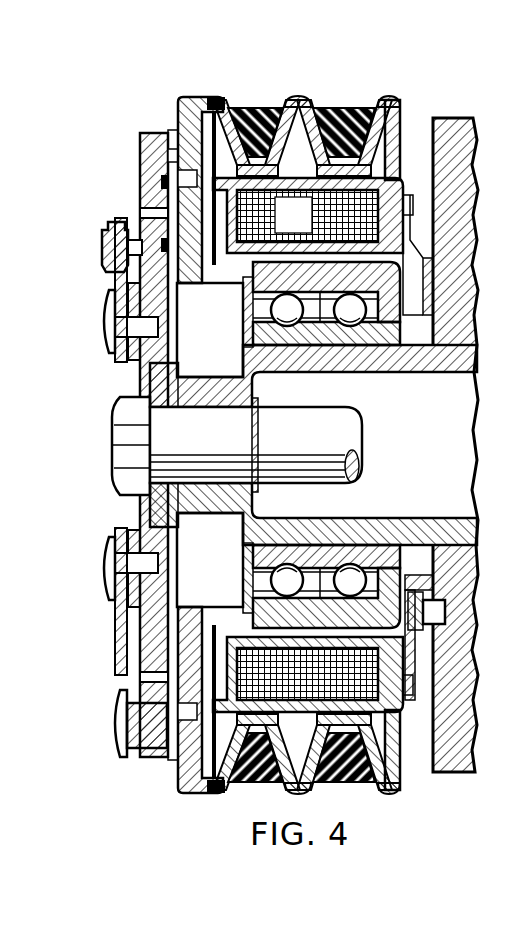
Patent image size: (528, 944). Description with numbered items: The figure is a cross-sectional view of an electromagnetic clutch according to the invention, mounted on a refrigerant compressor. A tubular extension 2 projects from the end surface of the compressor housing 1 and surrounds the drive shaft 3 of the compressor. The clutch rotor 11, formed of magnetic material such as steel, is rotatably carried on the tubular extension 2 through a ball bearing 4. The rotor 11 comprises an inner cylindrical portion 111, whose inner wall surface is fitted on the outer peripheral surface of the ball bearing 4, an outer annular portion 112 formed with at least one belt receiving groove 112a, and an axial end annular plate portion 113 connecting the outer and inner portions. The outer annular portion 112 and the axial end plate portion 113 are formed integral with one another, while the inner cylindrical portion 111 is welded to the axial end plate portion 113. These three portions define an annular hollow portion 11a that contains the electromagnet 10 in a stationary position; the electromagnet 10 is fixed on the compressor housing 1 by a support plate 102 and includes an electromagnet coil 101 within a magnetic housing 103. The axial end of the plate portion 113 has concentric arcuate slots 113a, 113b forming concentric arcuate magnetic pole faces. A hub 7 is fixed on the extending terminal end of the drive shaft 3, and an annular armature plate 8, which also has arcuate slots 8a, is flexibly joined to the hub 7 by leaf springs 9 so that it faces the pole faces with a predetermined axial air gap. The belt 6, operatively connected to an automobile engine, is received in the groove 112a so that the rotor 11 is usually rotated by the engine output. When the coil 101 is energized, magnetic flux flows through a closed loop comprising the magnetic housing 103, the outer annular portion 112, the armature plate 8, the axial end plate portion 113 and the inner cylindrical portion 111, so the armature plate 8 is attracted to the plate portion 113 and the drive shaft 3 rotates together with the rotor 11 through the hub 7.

The compressor housing 1 is at (453, 127).
The tubular extension 2 is at (357, 363).
The drive shaft 3 is at (327, 447).
The ball bearing 4 is at (450, 343).
The belt 6 is at (268, 106).
The hub 7 is at (220, 515).
The armature plate 8 is at (153, 135).
The arcuate slots 8a is at (172, 210).
The leaf springs 9 is at (127, 678).
The electromagnet 10 is at (424, 176).
The clutch rotor 11 is at (200, 91).
The annular hollow portion 11a is at (228, 626).
The electromagnet coil 101 is at (307, 445).
The support plate 102 is at (431, 272).
The magnetic housing 103 is at (415, 208).
The inner cylindrical portion 111 is at (224, 277).
The outer annular portion 112 is at (388, 98).
The belt receiving groove 112a is at (333, 105).
The axial end annular plate portion 113 is at (178, 156).
The concentric arcuate slot 113a is at (182, 183).
The concentric arcuate slot 113b is at (103, 241).